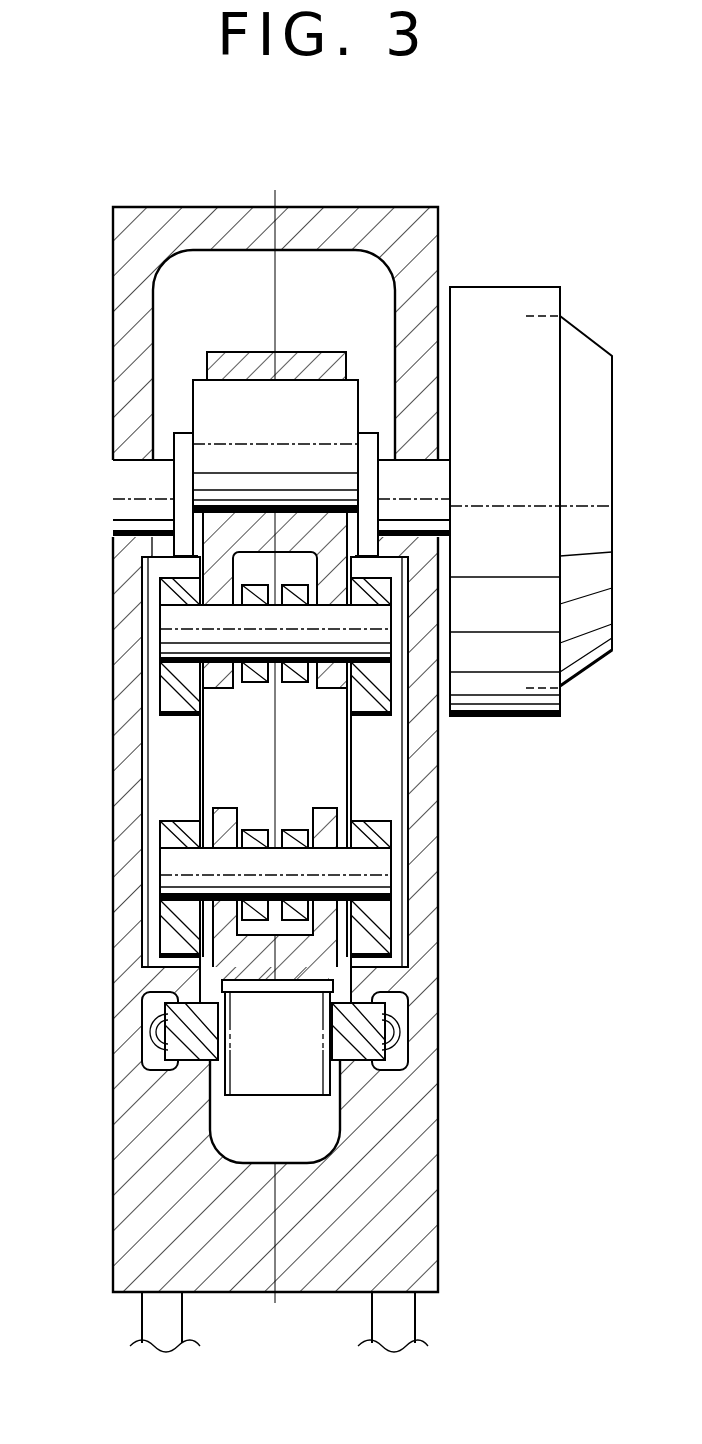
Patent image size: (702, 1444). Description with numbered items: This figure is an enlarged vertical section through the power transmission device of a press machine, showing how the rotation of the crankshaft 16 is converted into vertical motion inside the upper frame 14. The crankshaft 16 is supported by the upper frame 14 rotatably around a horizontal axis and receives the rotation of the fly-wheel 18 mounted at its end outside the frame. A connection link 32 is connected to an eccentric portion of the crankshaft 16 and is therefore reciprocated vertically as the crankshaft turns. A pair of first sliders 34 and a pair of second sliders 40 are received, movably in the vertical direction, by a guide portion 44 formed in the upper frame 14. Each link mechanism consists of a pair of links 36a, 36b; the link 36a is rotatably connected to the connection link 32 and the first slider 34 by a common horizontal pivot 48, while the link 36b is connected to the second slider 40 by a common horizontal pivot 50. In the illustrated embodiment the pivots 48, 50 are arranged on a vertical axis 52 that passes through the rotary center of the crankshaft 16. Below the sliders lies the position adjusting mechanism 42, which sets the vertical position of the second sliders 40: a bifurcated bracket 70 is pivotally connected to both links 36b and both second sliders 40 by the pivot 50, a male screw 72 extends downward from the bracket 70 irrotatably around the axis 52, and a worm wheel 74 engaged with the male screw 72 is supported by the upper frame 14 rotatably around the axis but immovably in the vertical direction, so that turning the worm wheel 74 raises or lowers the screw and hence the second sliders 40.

The upper frame 14 is at (399, 218).
The crankshaft 16 is at (120, 478).
The fly-wheel 18 is at (528, 297).
The connection link 32 is at (215, 537).
The first sliders 34 is at (163, 690).
The link 36a is at (295, 684).
The link 36b is at (302, 830).
The second sliders 40 is at (170, 925).
The position adjusting mechanism 42 is at (248, 1093).
The guide portion 44 is at (175, 780).
The pivot 48 is at (163, 635).
The pivot 50 is at (163, 875).
The axis 52 is at (277, 320).
The bifurcated bracket 70 is at (340, 975).
The male screw 72 is at (300, 1073).
The worm wheel 74 is at (178, 1032).